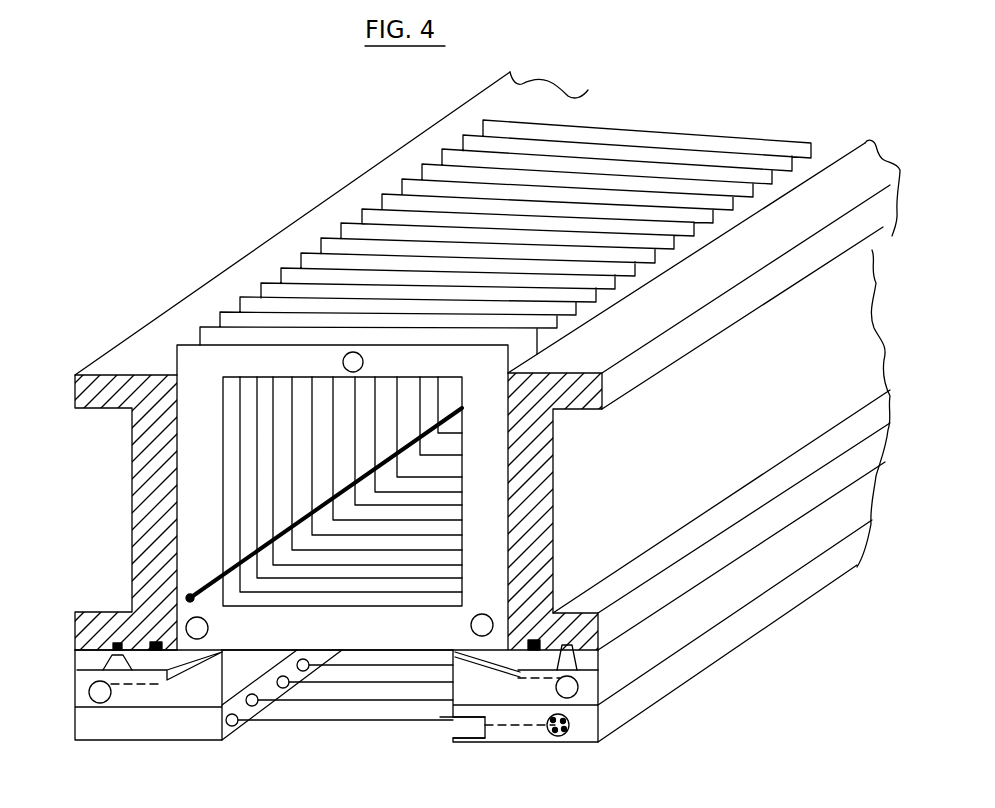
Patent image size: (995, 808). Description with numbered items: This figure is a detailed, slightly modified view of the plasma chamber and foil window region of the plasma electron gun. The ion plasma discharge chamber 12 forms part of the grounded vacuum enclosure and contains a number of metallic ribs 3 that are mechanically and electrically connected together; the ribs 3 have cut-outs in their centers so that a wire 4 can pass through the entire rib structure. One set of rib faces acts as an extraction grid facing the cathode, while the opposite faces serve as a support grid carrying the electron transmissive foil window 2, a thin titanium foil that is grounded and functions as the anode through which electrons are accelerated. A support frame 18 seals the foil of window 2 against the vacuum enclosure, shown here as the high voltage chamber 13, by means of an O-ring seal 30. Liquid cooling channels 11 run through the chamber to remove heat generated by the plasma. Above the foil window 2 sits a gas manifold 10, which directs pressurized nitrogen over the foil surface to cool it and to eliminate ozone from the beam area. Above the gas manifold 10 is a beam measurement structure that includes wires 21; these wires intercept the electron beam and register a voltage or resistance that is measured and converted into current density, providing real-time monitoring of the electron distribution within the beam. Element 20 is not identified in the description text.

The electron transmissive foil window 2 is at (420, 652).
The metallic ribs 3 is at (493, 465).
The wire 4 is at (303, 515).
The gas manifold 10 is at (89, 695).
The liquid cooling channels 11 is at (347, 355).
The ion plasma discharge chamber 12 is at (398, 548).
The high voltage chamber 13 is at (302, 233).
The support frame 18 is at (718, 578).
The base block 20 is at (183, 730).
The wires 21 is at (277, 723).
The O-ring seal 30 is at (533, 650).